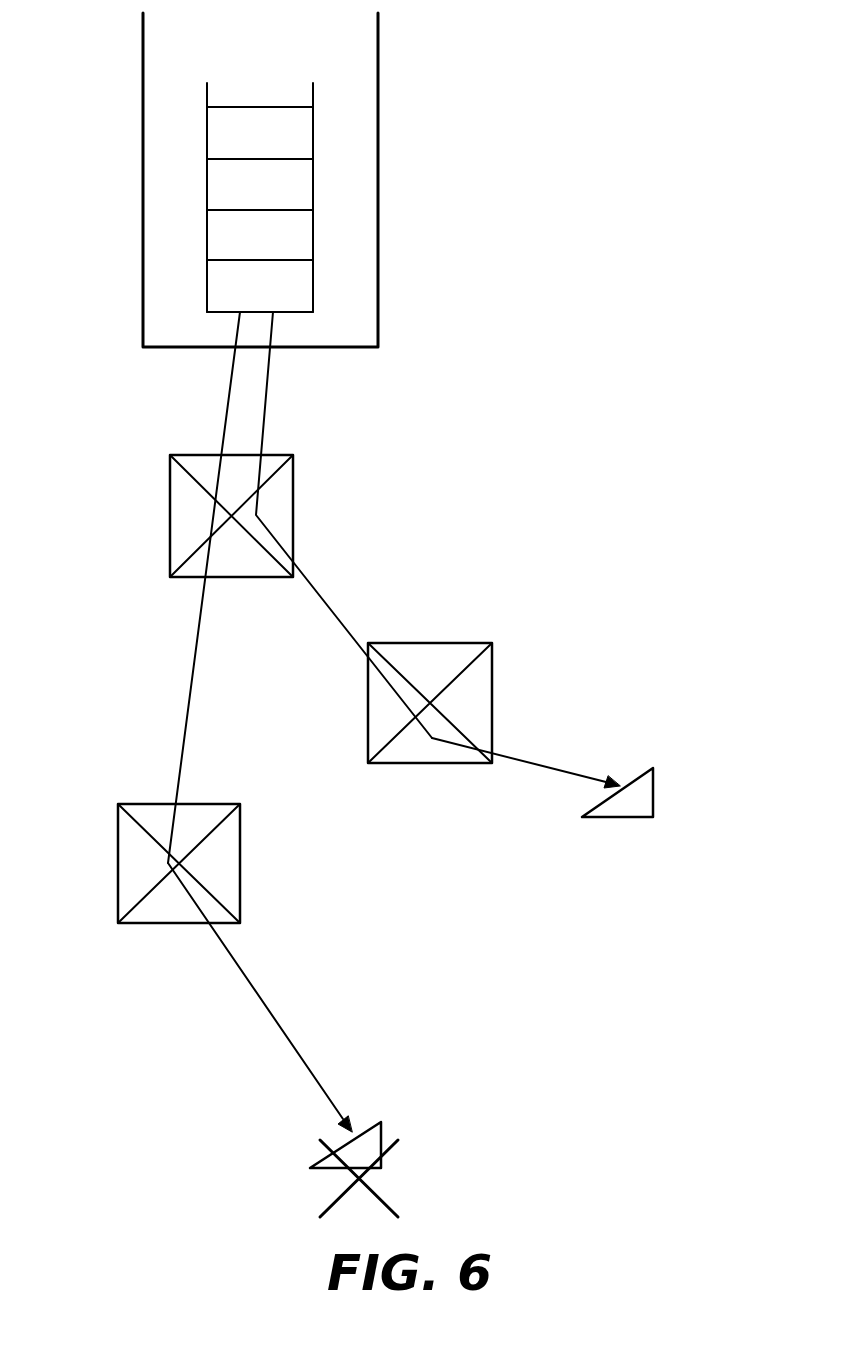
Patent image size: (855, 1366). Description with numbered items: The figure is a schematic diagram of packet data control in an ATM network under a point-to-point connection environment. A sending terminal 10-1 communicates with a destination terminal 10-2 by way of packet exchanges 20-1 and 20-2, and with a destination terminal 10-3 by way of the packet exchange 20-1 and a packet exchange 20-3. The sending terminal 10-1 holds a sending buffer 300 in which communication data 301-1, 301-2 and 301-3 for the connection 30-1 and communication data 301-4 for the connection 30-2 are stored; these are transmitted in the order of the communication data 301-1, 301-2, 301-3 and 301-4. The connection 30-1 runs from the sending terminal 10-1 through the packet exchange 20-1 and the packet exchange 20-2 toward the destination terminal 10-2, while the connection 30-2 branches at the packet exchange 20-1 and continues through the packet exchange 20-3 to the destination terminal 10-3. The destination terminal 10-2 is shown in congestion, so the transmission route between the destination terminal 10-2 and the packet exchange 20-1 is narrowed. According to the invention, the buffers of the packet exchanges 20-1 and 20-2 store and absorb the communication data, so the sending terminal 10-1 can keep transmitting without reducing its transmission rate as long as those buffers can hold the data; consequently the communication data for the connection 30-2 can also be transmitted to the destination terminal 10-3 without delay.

The sending terminal 10-1 is at (379, 86).
The sending buffer 300 is at (313, 180).
The communication data 301-1 is at (218, 293).
The communication data 301-2 is at (218, 241).
The communication data 301-3 is at (218, 188).
The communication data 301-4 is at (218, 137).
The packet exchange 20-1 is at (287, 453).
The packet exchange 20-2 is at (135, 804).
The packet exchange 20-3 is at (472, 643).
The connection 30-1 is at (197, 642).
The connection 30-2 is at (320, 593).
The destination terminal 10-2 is at (383, 1125).
The destination terminal 10-3 is at (654, 787).